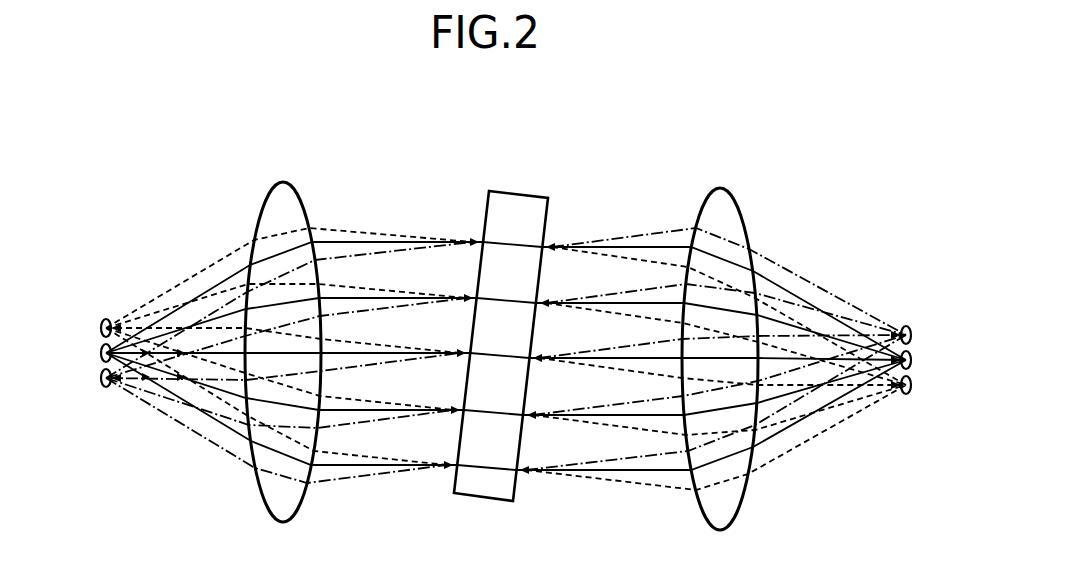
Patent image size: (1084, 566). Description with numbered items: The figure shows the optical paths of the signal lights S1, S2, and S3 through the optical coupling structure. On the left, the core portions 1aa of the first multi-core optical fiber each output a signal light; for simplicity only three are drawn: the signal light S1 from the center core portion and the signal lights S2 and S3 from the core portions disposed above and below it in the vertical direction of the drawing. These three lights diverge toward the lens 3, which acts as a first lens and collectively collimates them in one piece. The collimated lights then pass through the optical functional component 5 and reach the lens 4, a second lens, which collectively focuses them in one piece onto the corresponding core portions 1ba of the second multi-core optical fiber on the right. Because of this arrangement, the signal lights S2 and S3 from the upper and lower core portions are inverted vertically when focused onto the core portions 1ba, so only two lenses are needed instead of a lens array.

The core portions 1aa is at (111, 312).
The core portions 1ba is at (904, 312).
The lens 3 is at (283, 182).
The lens 4 is at (720, 188).
The optical functional component 5 is at (521, 192).
The signal light S1 is at (227, 433).
The signal light S2 is at (191, 276).
The signal light S3 is at (157, 408).